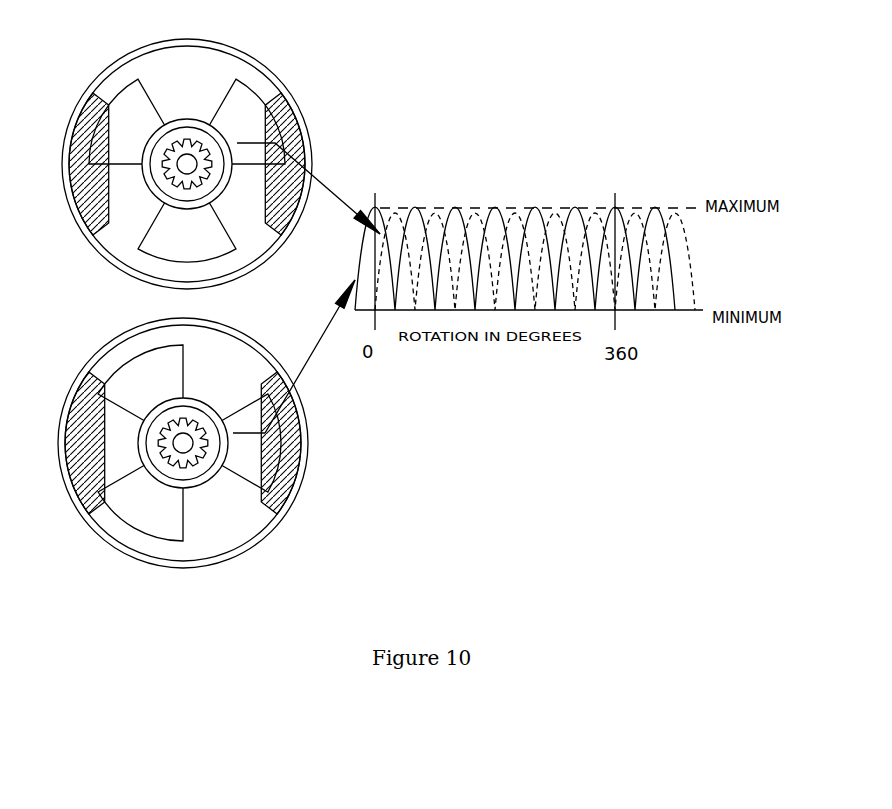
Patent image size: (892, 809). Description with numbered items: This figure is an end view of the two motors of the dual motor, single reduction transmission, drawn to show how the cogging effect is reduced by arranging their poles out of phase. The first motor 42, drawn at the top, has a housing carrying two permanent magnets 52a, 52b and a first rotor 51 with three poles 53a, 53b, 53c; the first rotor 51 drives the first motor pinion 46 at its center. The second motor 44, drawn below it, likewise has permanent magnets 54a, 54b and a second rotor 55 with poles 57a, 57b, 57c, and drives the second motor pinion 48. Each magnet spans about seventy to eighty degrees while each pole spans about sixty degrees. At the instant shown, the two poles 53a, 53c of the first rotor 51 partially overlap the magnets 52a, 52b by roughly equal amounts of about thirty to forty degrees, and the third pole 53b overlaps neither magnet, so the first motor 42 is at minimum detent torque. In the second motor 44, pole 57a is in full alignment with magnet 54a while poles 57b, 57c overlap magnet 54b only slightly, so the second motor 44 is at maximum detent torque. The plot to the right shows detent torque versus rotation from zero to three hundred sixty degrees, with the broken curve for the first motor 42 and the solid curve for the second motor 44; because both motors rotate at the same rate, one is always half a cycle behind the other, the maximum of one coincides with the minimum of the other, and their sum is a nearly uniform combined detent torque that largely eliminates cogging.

The first motor 42 is at (253, 60).
The second motor 44 is at (270, 527).
The first motor pinion 46 is at (207, 177).
The second motor pinion 48 is at (163, 450).
The first rotor 51 is at (193, 119).
The second rotor 55 is at (200, 402).
The permanent magnet 52a is at (297, 138).
The permanent magnet 52b is at (83, 115).
The pole 53a is at (245, 102).
The pole 53b is at (147, 233).
The pole 53c is at (135, 103).
The permanent magnet 54a is at (300, 453).
The permanent magnet 54b is at (63, 442).
The pole 57a is at (243, 470).
The pole 57b is at (180, 523).
The pole 57c is at (127, 402).